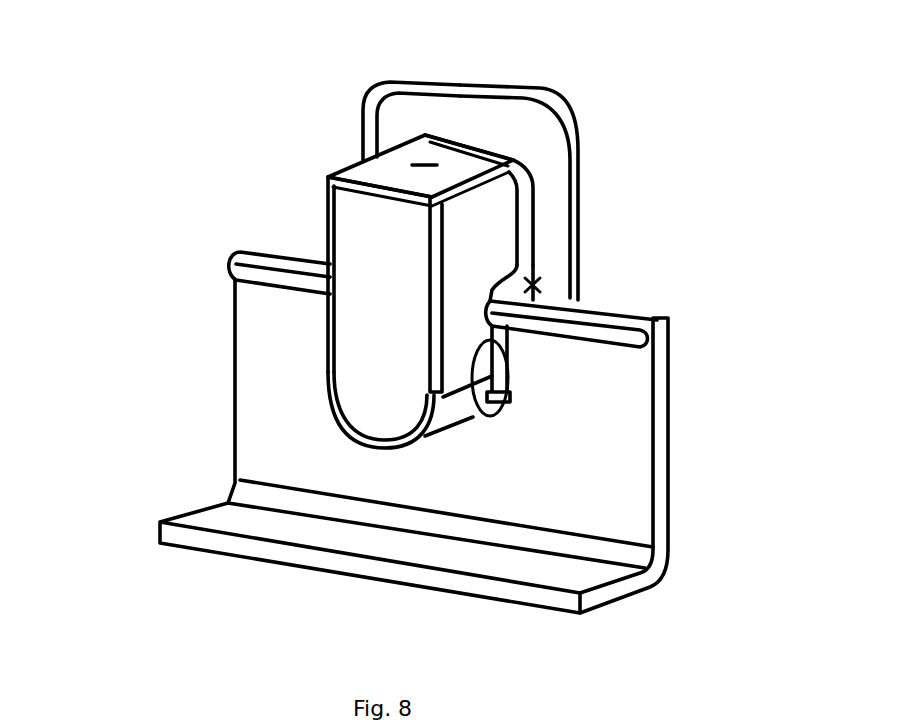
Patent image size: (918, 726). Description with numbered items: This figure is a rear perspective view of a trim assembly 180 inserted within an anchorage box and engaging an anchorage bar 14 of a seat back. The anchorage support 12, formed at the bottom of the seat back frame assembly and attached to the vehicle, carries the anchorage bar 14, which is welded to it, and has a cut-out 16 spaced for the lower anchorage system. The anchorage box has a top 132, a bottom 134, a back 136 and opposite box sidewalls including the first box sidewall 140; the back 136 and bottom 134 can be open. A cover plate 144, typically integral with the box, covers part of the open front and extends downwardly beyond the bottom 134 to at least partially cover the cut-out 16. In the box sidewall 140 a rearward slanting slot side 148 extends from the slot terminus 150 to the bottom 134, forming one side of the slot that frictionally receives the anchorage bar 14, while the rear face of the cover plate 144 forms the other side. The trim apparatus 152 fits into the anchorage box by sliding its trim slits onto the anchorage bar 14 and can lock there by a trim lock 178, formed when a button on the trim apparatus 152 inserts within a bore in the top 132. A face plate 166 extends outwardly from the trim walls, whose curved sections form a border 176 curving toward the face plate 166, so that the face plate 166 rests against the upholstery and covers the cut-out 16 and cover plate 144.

The anchorage support 12 is at (255, 325).
The anchorage bar 14 is at (228, 270).
The cover plate 144 is at (525, 305).
The cut-out 16 is at (500, 395).
The top 132 is at (393, 167).
The bottom 134 is at (428, 440).
The back 136 is at (353, 363).
The first box sidewall 140 is at (480, 240).
The slot side 148 is at (483, 415).
The slot terminus 150 is at (513, 284).
The trim apparatus 152 is at (390, 107).
The face plate 166 is at (513, 127).
The border 176 is at (460, 147).
The trim lock 178 is at (420, 163).
The trim assembly 180 is at (338, 206).